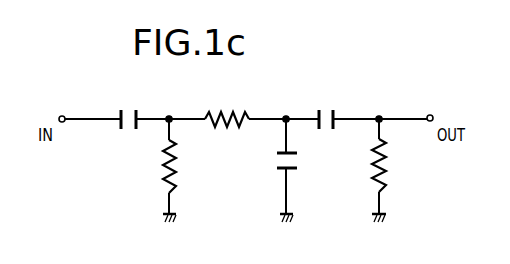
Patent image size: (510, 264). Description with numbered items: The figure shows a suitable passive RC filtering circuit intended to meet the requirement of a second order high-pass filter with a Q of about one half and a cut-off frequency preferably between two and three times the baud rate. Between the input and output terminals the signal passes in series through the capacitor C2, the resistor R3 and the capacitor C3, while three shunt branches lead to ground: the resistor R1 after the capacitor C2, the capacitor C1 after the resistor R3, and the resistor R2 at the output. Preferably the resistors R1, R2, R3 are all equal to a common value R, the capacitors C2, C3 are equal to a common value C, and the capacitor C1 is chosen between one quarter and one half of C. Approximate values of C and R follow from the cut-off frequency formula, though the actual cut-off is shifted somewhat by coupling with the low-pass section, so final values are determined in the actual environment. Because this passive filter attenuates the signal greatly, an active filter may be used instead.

The capacitor C2 is at (121, 133).
The resistor R1 is at (158, 170).
The resistor R3 is at (227, 106).
The capacitor C1 is at (277, 170).
The capacitor C3 is at (337, 107).
The resistor R2 is at (391, 170).